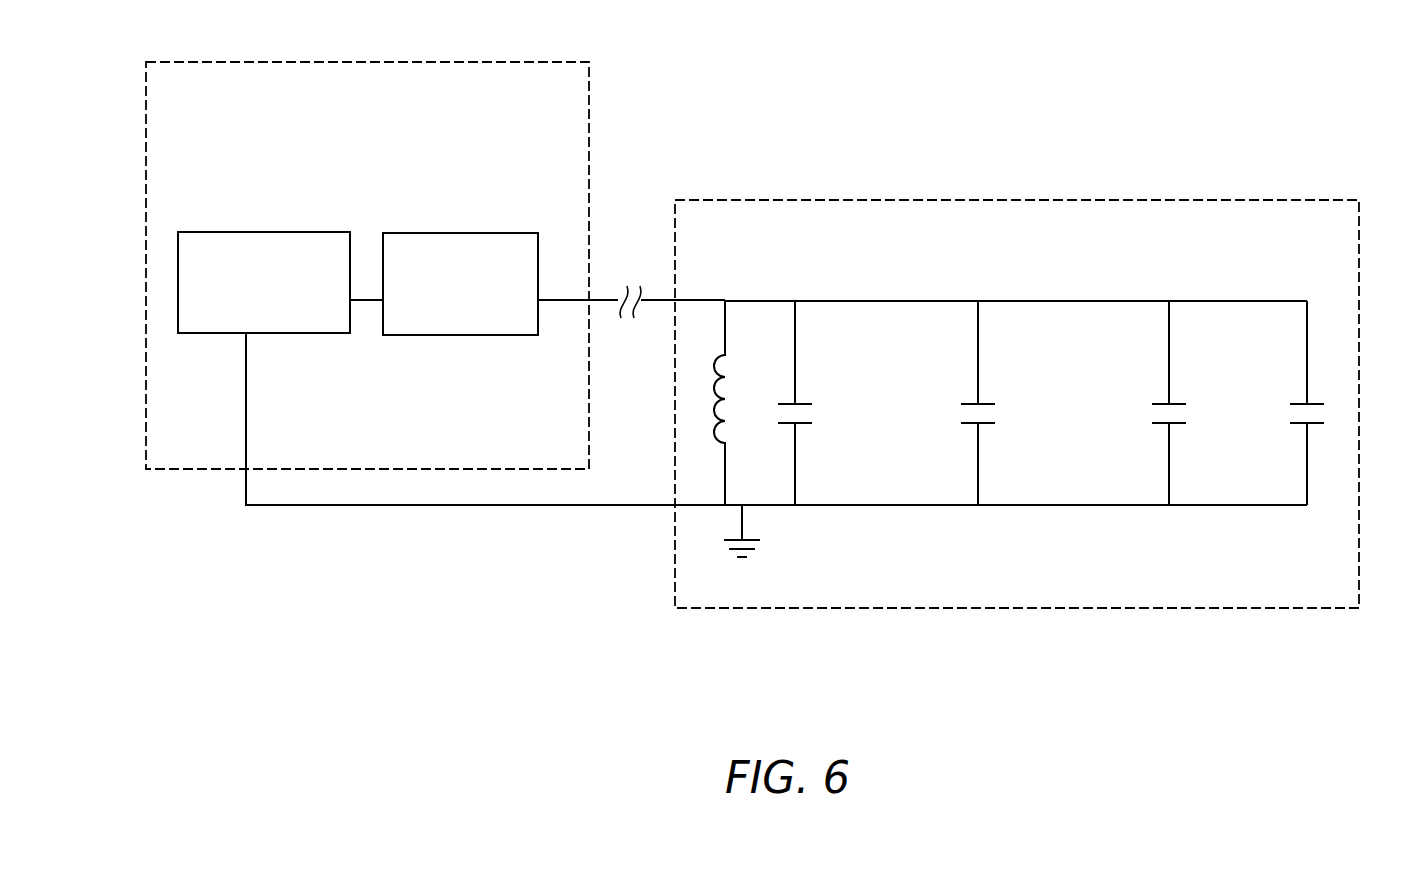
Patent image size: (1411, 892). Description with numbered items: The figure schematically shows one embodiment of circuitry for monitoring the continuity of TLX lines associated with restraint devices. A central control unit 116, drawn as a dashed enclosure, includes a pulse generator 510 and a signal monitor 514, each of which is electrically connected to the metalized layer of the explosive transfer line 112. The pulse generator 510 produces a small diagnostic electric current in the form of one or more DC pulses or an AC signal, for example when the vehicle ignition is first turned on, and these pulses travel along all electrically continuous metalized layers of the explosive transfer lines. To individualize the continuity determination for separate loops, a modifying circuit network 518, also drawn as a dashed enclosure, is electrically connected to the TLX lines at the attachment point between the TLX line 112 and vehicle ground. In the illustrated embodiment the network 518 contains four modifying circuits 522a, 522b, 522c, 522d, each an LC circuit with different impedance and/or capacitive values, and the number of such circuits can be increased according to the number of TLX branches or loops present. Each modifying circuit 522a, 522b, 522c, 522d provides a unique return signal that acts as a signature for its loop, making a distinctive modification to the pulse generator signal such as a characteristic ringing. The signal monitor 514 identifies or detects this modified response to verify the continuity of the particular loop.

The central control unit 116 is at (568, 62).
The pulse generator 510 is at (178, 263).
The signal monitor 514 is at (538, 248).
The modifying circuit network 518 is at (806, 200).
The explosive transfer line 112 is at (735, 300).
The modifying circuit 522a is at (805, 327).
The modifying circuit 522b is at (990, 337).
The modifying circuit 522c is at (1178, 337).
The modifying circuit 522d is at (1310, 337).